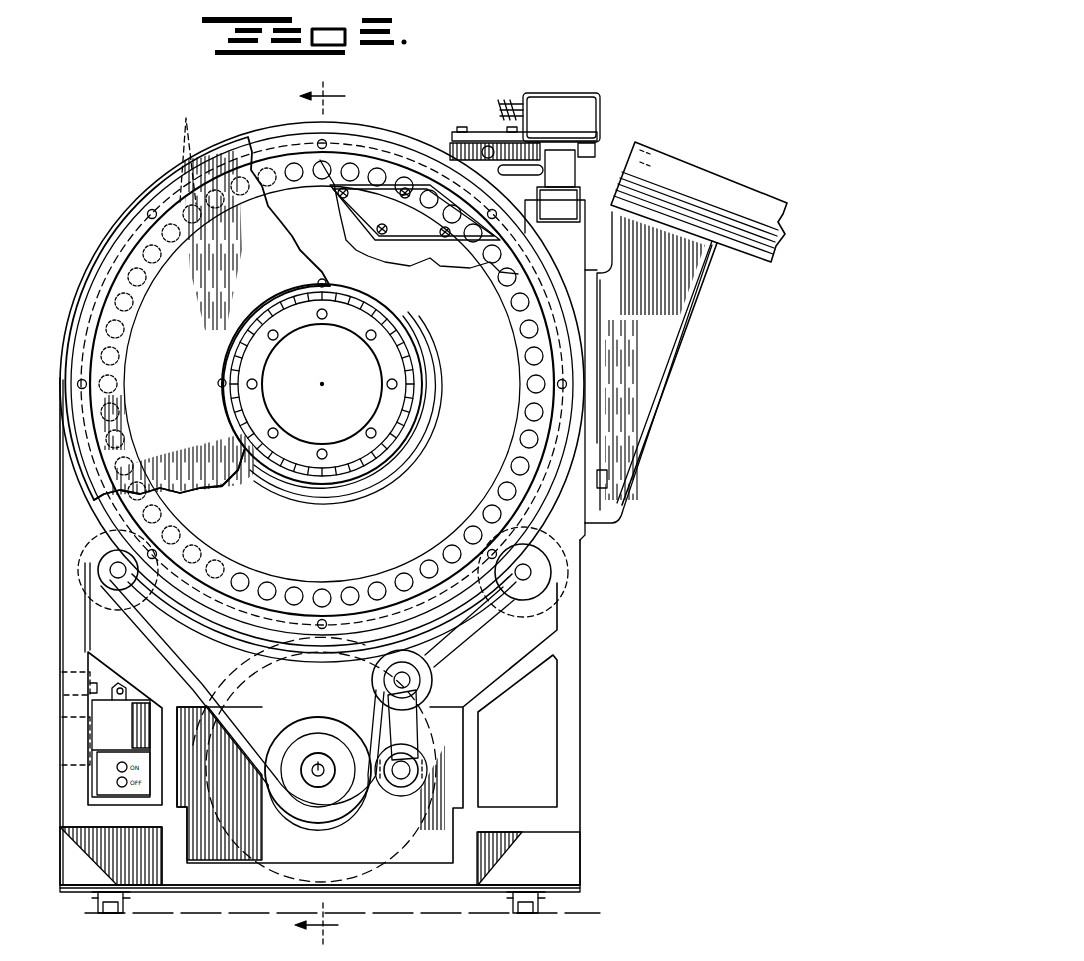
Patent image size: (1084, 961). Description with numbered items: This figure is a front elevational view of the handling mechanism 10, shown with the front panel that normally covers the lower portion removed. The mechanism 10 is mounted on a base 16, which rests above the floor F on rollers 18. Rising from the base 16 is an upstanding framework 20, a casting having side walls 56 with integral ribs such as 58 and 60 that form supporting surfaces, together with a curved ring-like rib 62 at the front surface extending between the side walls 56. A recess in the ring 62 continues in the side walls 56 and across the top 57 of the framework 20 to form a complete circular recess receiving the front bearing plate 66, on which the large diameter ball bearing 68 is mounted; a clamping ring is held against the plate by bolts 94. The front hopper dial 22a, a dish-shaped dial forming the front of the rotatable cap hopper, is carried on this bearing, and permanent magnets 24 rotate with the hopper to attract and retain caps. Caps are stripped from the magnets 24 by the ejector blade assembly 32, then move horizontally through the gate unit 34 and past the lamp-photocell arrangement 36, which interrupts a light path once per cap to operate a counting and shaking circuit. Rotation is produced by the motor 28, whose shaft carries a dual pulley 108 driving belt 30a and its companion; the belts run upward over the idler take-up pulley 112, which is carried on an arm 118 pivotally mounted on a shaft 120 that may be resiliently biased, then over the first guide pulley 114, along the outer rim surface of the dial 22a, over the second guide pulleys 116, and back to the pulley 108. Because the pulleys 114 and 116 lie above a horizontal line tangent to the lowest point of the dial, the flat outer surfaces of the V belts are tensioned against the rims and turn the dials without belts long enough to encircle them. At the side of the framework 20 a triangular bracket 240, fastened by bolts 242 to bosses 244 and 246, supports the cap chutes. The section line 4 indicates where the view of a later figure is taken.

The handling mechanism 10 is at (130, 198).
The upstanding framework 20 is at (62, 598).
The permanent magnets 24 is at (197, 295).
The top of the framework 57 is at (220, 134).
The section line of Figure 4 is at (324, 514).
The lamp-photocell arrangement 36 is at (556, 194).
The gate unit 34 is at (600, 80).
The ejector blade assembly 32 is at (416, 221).
The front hopper dial 22a is at (395, 266).
The boss 246 is at (596, 258).
The bolts 242 is at (700, 292).
The triangular bracket 240 is at (698, 312).
The bolts 94 is at (318, 284).
The ball bearing 68 is at (396, 336).
The front bearing plate 66 is at (236, 505).
The boss 244 is at (584, 540).
The second guide pulleys 116 is at (124, 590).
The rib 58 is at (120, 638).
The curved ring-like rib 62 is at (206, 626).
The idler take-up pulley 112 is at (420, 662).
The first guide pulley 114 is at (500, 604).
The arm 118 is at (410, 716).
The side walls 56 is at (60, 652).
The belt 30a is at (228, 718).
The rib 60 is at (176, 784).
The dual pulley 108 is at (300, 818).
The shaft 120 is at (398, 800).
The motor 28 is at (440, 820).
The base 16 is at (366, 895).
The rollers 18 is at (118, 915).
The floor F is at (412, 918).